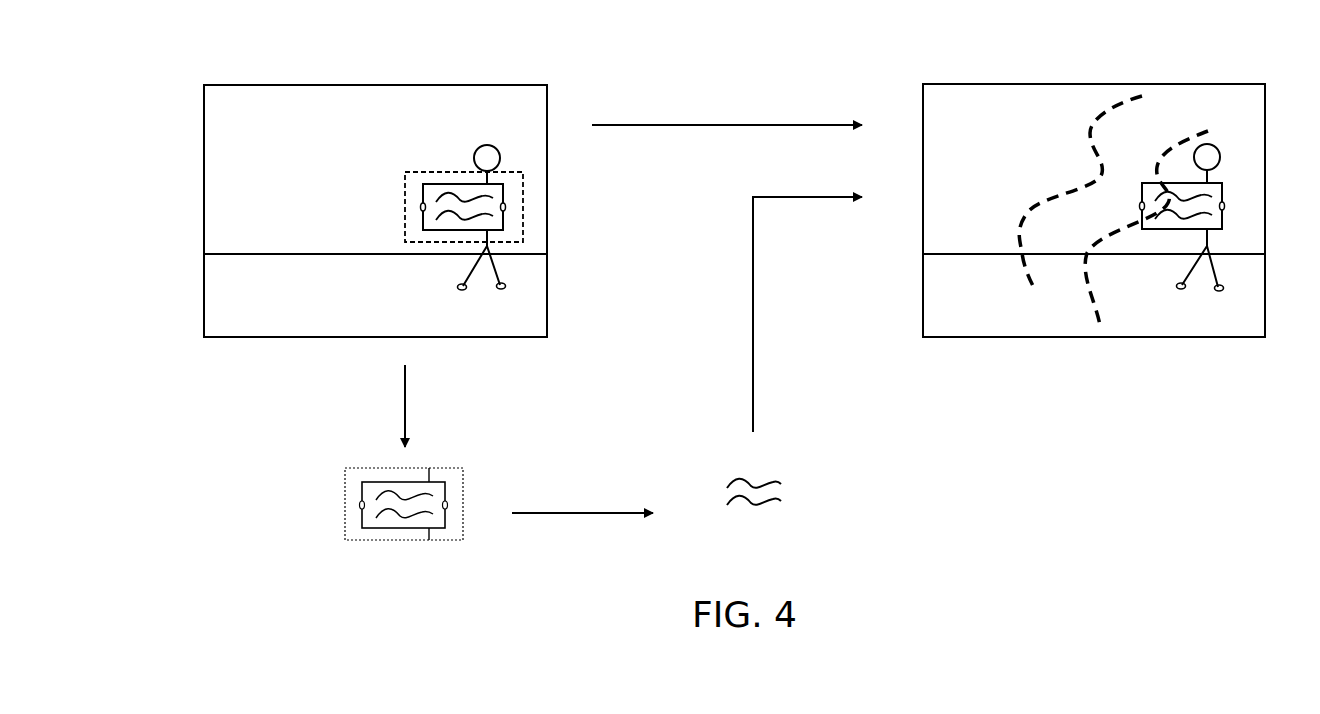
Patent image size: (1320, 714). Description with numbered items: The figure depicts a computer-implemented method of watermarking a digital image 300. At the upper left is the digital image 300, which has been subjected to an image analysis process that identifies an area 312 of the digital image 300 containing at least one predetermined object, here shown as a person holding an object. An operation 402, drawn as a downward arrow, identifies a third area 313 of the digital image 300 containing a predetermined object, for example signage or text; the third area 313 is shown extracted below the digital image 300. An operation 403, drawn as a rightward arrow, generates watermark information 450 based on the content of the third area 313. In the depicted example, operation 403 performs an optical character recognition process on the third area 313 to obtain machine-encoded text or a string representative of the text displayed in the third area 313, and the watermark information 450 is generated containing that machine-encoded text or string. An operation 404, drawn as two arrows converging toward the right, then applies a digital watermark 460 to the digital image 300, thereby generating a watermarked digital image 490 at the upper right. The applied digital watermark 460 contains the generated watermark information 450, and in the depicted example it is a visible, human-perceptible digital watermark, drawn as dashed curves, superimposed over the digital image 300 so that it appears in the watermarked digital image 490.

The digital image 300 is at (373, 85).
The area of the digital image 312 is at (523, 203).
The third area 313 is at (347, 515).
The operation of identifying a third area 402 is at (405, 410).
The operation of generating watermark information 403 is at (570, 513).
The operation of applying a digital watermark 404 is at (752, 125).
The watermark information 450 is at (800, 490).
The digital watermark 460 is at (1094, 100).
The watermarked digital image 490 is at (1212, 84).